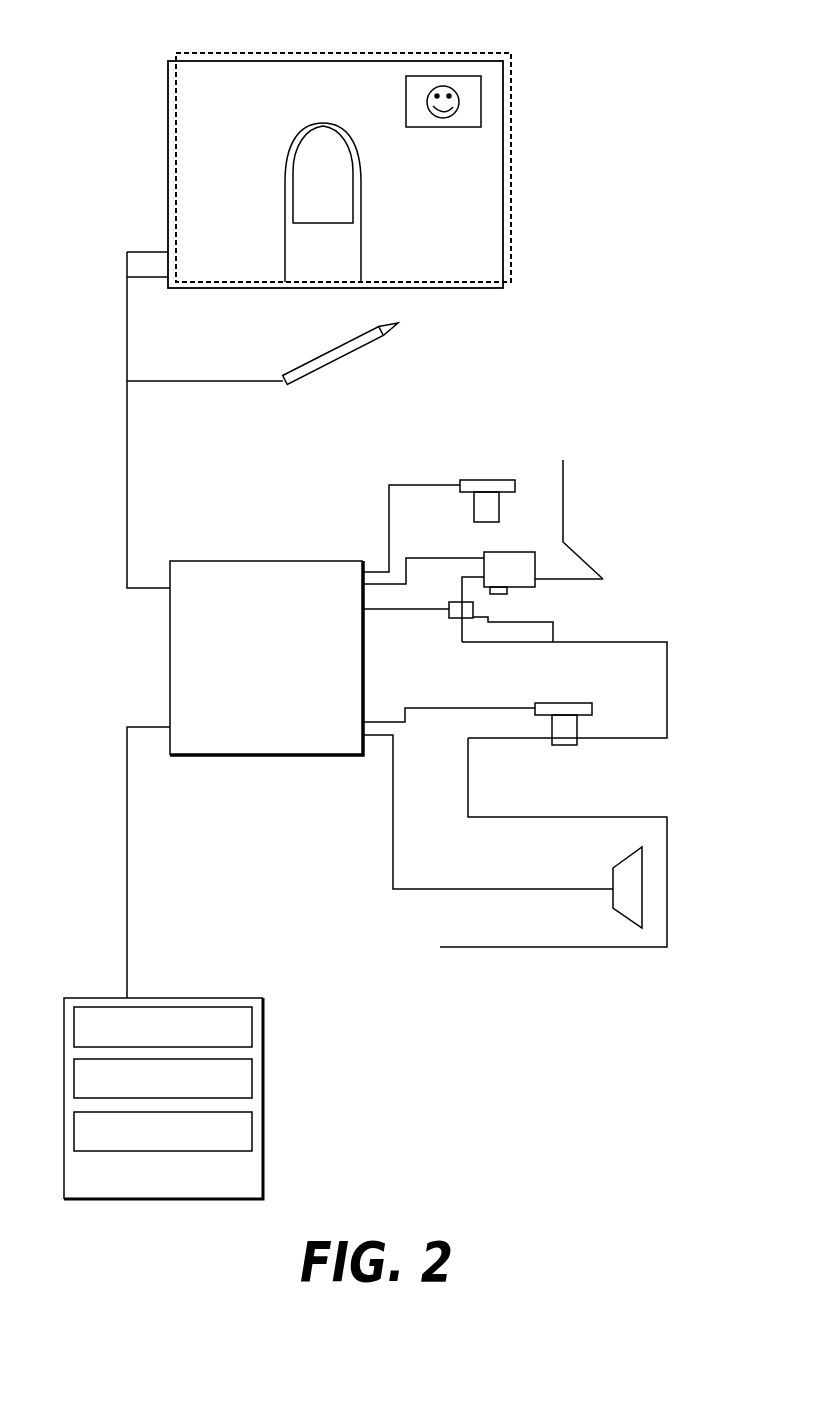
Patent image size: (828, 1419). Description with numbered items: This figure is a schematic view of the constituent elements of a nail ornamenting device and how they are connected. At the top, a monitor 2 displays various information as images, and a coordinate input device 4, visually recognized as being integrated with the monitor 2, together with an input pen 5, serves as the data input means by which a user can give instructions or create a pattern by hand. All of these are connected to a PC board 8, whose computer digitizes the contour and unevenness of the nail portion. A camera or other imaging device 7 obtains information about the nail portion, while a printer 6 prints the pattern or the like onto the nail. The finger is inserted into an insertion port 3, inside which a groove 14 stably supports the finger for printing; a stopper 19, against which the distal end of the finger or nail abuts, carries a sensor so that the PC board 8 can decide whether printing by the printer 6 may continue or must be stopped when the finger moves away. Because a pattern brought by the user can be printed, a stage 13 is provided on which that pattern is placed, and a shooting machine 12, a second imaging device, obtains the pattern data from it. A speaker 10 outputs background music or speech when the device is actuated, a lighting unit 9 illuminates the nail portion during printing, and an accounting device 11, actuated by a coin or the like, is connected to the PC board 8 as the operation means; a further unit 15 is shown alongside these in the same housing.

The monitor 2 is at (492, 158).
The insertion port 3 is at (633, 638).
The coordinate input device 4 is at (475, 53).
The input pen 5 is at (345, 357).
The printer 6 is at (513, 558).
The camera or imaging device 7 is at (478, 485).
The PC board 8 is at (267, 561).
The lighting unit 9 is at (240, 1030).
The speaker 10 is at (642, 888).
The accounting device 11 is at (240, 1082).
The shooting machine 12 is at (562, 698).
The stage 13 is at (633, 817).
The groove 14 is at (537, 618).
The storage unit 15 is at (240, 1135).
The stopper 19 is at (450, 620).